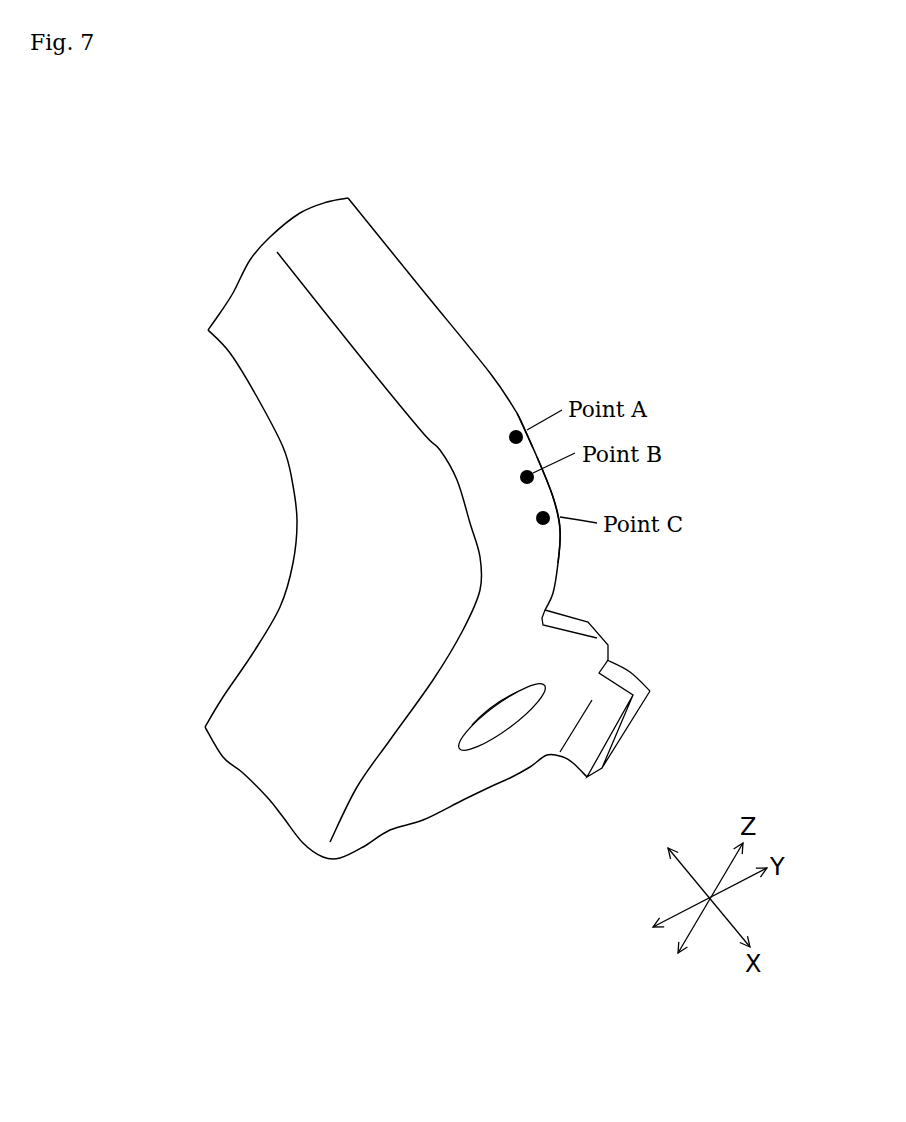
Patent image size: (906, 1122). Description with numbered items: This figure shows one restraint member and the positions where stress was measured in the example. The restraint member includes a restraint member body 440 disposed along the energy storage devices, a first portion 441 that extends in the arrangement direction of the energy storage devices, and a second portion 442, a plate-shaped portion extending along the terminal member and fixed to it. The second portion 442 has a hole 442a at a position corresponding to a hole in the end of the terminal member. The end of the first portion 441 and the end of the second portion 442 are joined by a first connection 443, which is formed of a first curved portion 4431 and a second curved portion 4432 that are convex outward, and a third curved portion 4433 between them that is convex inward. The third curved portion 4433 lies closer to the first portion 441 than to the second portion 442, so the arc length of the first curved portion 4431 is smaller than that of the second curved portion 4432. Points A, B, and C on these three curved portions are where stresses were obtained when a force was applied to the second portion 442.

The restraint member body 440 is at (297, 523).
The first portion 441 is at (400, 307).
The second portion 442 is at (422, 788).
The hole 442a is at (493, 728).
The first connection 443 is at (563, 553).
The first curved portion 4431 is at (523, 422).
The second curved portion 4432 is at (562, 533).
The third curved portion 4433 is at (545, 478).